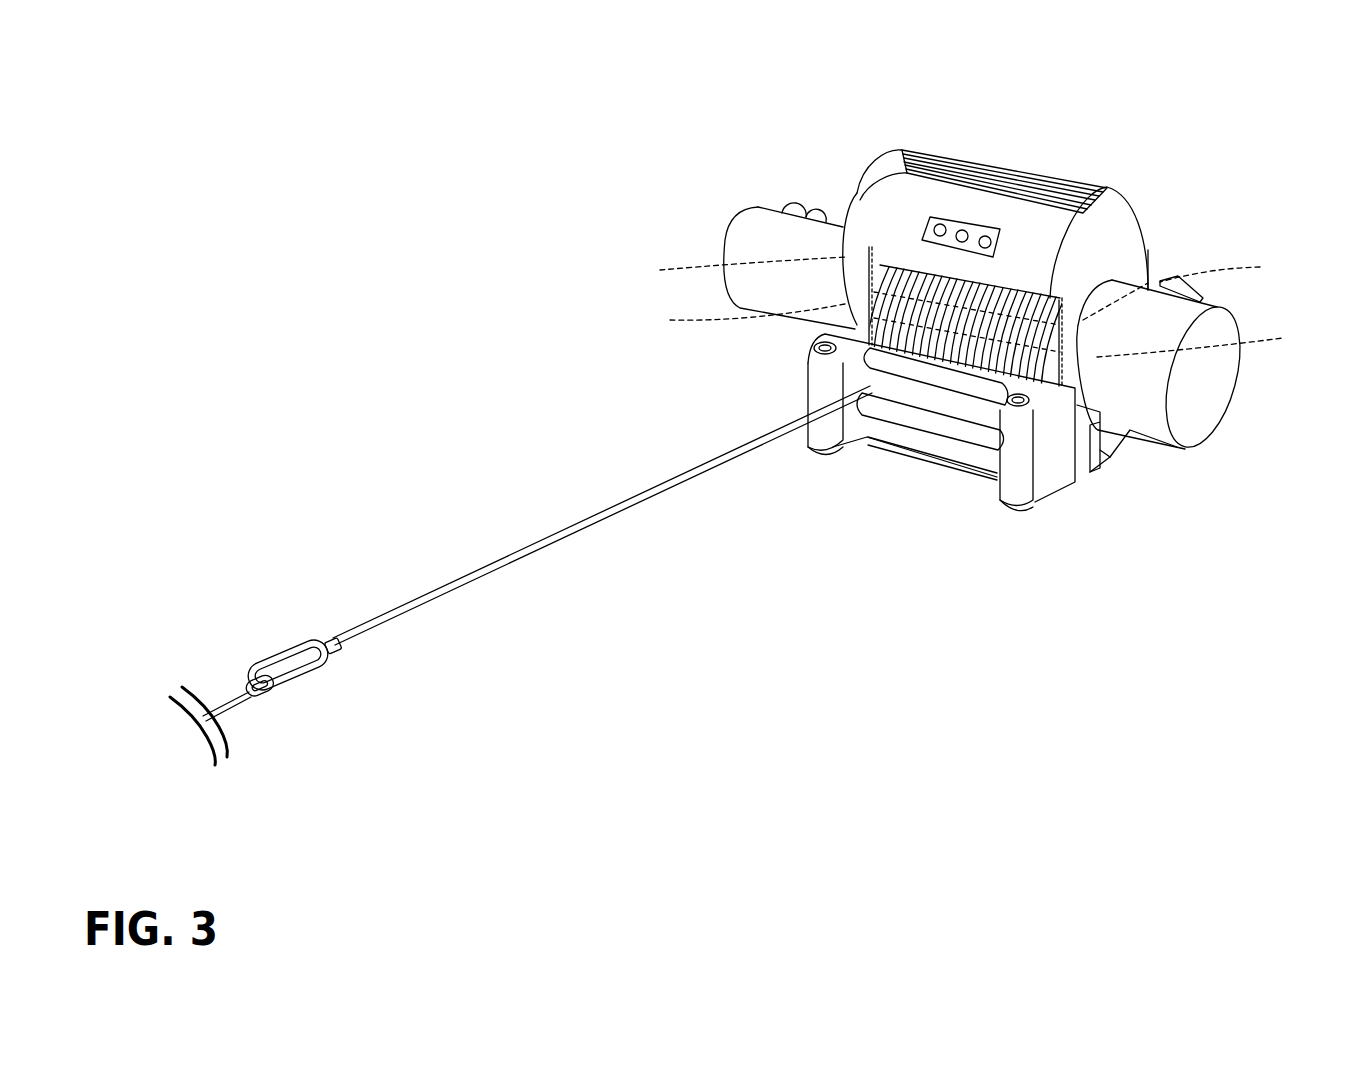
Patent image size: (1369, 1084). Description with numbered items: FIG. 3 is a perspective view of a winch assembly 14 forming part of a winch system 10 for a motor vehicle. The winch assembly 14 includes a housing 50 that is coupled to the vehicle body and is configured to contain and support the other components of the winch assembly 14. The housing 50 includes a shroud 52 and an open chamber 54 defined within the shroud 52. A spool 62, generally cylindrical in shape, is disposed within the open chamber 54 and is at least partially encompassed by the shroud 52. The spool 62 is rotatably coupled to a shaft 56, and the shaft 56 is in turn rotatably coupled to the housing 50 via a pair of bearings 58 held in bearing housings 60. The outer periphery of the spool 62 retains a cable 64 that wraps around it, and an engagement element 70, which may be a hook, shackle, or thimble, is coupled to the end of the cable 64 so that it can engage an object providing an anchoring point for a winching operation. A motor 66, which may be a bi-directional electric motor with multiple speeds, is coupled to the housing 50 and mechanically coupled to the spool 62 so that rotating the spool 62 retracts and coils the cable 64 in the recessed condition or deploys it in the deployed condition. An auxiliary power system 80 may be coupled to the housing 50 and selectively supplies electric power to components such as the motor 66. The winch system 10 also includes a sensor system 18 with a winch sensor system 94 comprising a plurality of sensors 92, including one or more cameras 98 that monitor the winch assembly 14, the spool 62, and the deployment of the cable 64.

The winch system 10 is at (606, 243).
The winch assembly 14 is at (917, 462).
The sensor system 18 is at (938, 217).
The housing 50 is at (1110, 457).
The shroud 52 is at (1150, 257).
The open chamber 54 is at (886, 256).
The shaft 56 is at (1033, 280).
The bearing 58 is at (960, 277).
The bearing housing 60 is at (975, 330).
The spool 62 is at (1020, 270).
The cable 64 is at (587, 517).
The motor 66 is at (1217, 417).
The engagement element 70 is at (271, 657).
The auxiliary power system 80 is at (733, 225).
The sensors 92 is at (944, 222).
The winch sensor system 94 is at (964, 226).
The camera 98 is at (968, 236).